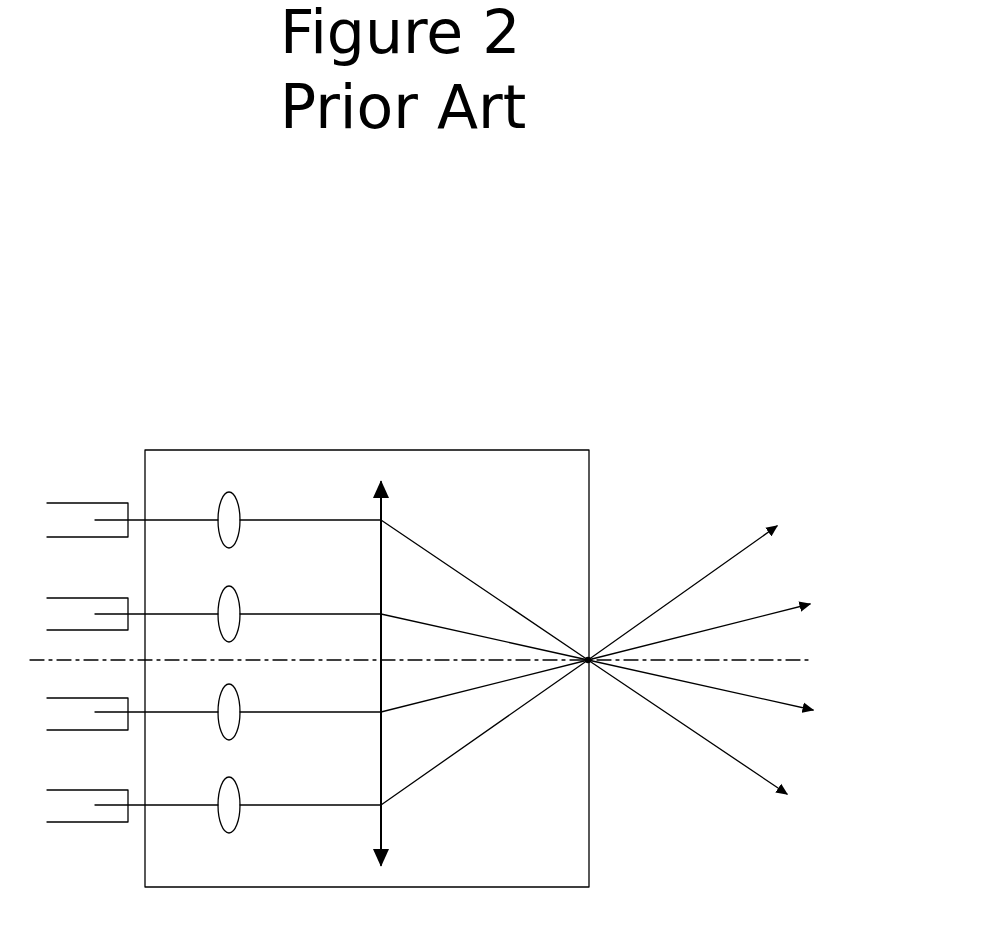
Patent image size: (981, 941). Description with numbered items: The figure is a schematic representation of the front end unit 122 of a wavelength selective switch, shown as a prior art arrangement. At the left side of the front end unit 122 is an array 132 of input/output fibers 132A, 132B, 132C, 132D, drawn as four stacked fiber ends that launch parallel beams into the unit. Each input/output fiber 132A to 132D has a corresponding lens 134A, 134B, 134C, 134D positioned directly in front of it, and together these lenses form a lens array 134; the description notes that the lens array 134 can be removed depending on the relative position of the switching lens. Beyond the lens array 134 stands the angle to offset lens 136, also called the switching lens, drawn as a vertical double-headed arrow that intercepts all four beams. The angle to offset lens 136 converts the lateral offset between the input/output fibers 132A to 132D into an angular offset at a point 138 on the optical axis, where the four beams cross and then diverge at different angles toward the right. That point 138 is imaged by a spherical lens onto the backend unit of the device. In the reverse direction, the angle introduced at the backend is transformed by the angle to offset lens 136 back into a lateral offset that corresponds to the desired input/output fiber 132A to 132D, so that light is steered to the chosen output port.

The front end unit 122 is at (648, 458).
The array of input/output fibers 132 is at (126, 619).
The input/output fiber 132A is at (62, 503).
The input/output fiber 132B is at (63, 598).
The input/output fiber 132C is at (63, 730).
The input/output fiber 132D is at (65, 823).
The lens array 134 is at (263, 610).
The lens 134A is at (241, 497).
The lens 134B is at (241, 590).
The lens 134C is at (240, 725).
The lens 134D is at (240, 820).
The angle to offset lens 136 is at (385, 497).
The point 138 is at (602, 682).